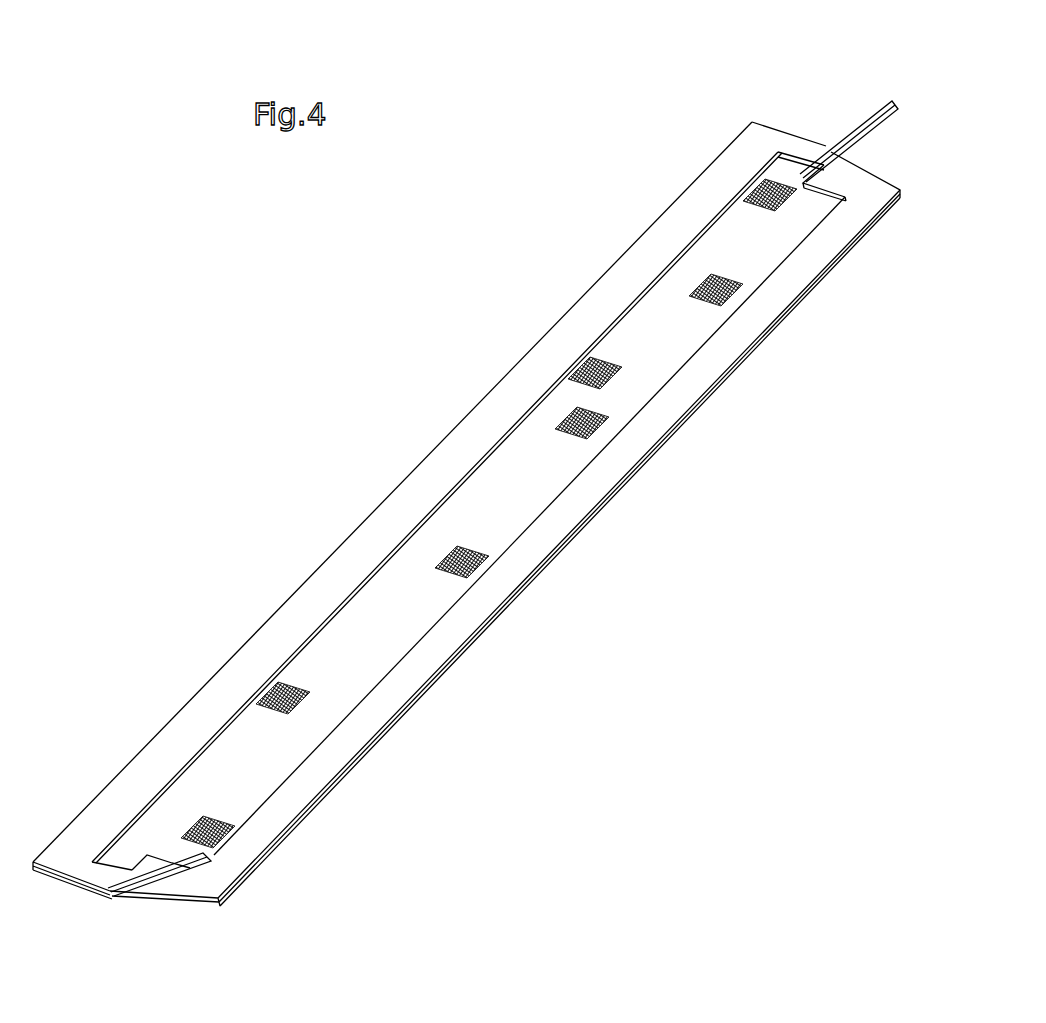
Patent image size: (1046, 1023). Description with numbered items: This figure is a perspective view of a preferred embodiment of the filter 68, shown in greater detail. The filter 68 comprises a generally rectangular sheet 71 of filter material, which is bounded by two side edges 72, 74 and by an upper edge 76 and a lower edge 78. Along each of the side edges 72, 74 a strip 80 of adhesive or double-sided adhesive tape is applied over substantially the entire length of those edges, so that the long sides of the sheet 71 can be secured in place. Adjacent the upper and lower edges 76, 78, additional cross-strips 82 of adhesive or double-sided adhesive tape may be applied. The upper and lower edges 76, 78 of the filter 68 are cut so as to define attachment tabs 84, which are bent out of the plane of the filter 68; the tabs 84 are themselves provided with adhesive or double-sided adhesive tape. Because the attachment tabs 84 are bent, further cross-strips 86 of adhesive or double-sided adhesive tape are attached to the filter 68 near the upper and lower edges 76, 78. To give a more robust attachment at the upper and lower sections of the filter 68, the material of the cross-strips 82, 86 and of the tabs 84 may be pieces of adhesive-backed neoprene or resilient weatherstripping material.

The filter 68 is at (444, 374).
The sheet of filter material 71 is at (372, 632).
The side edge 72 is at (257, 627).
The side edge 74 is at (507, 603).
The upper edge 76 is at (777, 125).
The lower edge 78 is at (52, 876).
The strip of adhesive 80 is at (353, 548).
The cross-strip of adhesive 82 is at (90, 888).
The attachment tab 84 is at (227, 862).
The cross-strip of adhesive 86 is at (182, 900).